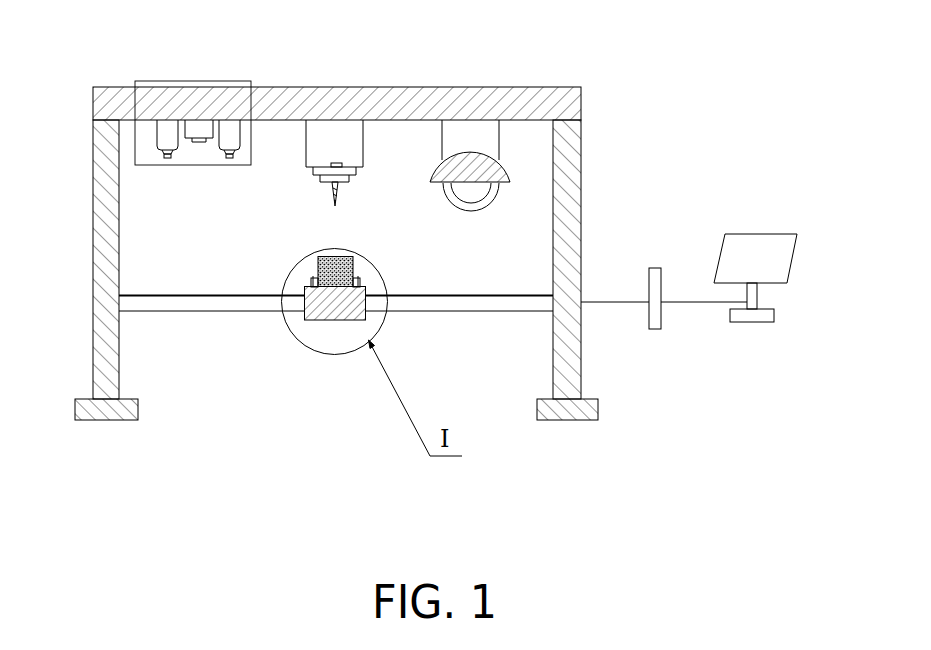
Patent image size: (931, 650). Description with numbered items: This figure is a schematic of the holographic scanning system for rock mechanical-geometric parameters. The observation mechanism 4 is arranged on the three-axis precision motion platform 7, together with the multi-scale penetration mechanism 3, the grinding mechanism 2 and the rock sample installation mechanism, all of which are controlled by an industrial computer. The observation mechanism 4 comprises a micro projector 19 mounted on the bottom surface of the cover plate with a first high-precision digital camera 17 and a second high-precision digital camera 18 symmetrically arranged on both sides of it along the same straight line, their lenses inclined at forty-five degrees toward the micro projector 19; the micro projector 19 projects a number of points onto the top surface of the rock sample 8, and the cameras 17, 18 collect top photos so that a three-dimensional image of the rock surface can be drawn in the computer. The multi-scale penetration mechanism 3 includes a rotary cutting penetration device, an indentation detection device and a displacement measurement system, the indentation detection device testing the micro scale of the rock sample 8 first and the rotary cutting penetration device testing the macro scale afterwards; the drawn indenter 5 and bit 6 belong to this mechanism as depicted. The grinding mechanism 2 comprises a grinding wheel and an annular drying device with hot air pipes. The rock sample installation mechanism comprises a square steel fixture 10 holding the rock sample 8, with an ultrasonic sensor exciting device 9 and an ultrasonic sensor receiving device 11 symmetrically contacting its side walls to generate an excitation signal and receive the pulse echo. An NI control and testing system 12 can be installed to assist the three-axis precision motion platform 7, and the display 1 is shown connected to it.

The display terminal 1 is at (762, 255).
The grinding mechanism 2 is at (475, 147).
The multi-scale penetration mechanism 3 is at (338, 138).
The observation mechanism 4 is at (172, 82).
The chuck 5 is at (332, 163).
The drill bit 6 is at (333, 180).
The three-axis precision motion platform 7 is at (220, 307).
The rock sample 8 is at (328, 268).
The ultrasonic sensor exciting device 9 is at (311, 282).
The square steel fixture 10 is at (354, 276).
The ultrasonic sensor receiving device 11 is at (362, 281).
The NI control and testing system 12 is at (657, 325).
The first high-precision digital camera 17 is at (168, 130).
The second high-precision digital camera 18 is at (232, 137).
The micro projector 19 is at (200, 130).